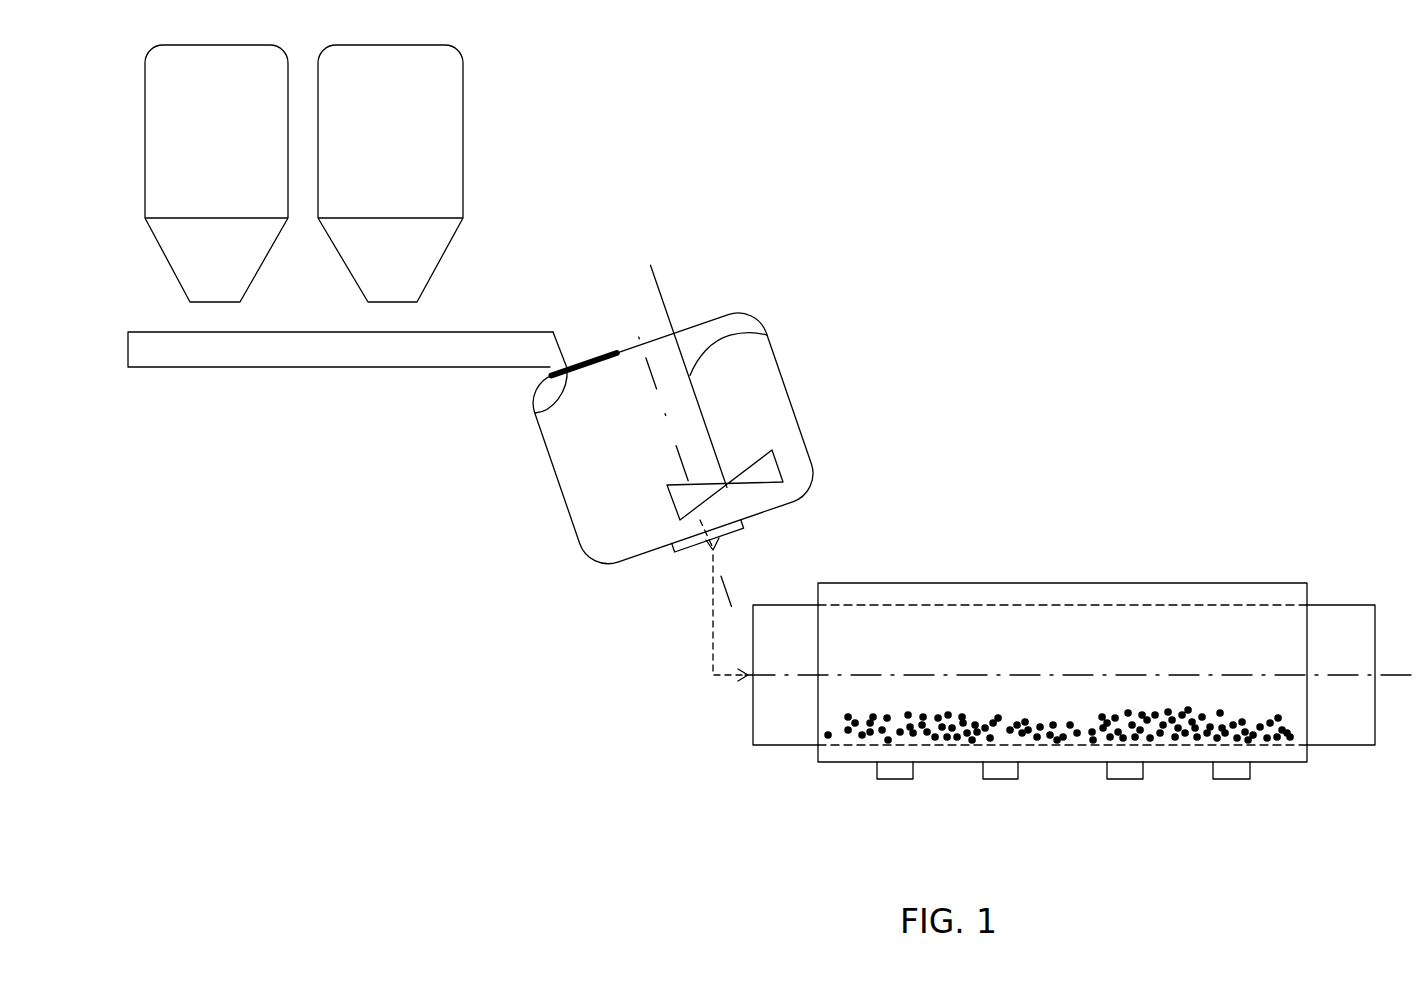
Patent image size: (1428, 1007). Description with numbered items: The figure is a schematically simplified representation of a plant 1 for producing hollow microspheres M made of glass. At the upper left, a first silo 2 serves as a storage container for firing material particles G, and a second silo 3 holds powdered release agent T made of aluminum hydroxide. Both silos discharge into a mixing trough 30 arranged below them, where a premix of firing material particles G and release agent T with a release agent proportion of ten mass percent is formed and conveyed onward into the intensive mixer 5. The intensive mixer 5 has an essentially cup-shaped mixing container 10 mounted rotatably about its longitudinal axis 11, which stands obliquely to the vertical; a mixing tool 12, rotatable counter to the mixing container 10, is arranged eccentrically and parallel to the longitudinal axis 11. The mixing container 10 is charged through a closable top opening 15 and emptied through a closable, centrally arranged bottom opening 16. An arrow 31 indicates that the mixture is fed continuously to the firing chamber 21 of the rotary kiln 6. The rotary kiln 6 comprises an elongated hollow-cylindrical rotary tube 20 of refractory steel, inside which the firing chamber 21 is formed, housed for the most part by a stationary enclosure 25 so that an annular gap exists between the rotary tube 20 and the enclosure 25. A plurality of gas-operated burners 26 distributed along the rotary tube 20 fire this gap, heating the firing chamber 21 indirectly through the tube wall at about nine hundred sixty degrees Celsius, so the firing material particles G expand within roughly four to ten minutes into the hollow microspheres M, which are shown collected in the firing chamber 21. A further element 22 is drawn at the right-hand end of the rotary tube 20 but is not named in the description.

The plant 1 is at (921, 255).
The first silo 2 is at (145, 108).
The second silo 3 is at (463, 100).
The intensive mixer 5 is at (743, 262).
The rotary kiln 6 is at (1060, 538).
The mixing container 10 is at (785, 370).
The longitudinal axis 11 is at (632, 313).
The mixing tool 12 is at (767, 335).
The top opening 15 is at (568, 378).
The bottom opening 16 is at (745, 527).
The rotary tube 20 is at (783, 745).
The firing chamber 21 is at (930, 660).
The trough outlet 22 is at (1395, 675).
The stationary enclosure 25 is at (1198, 585).
The gas-operated burners 26 is at (895, 779).
The mixing trough 30 is at (257, 367).
The arrow 31 is at (713, 630).
The firing material particles G is at (165, 142).
The release agent T is at (445, 157).
The hollow microspheres M is at (1193, 740).